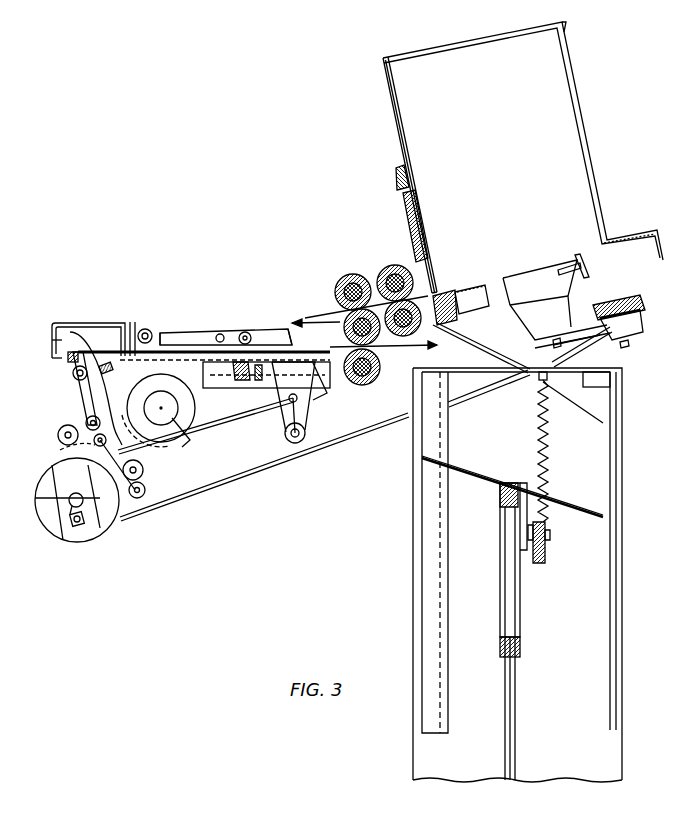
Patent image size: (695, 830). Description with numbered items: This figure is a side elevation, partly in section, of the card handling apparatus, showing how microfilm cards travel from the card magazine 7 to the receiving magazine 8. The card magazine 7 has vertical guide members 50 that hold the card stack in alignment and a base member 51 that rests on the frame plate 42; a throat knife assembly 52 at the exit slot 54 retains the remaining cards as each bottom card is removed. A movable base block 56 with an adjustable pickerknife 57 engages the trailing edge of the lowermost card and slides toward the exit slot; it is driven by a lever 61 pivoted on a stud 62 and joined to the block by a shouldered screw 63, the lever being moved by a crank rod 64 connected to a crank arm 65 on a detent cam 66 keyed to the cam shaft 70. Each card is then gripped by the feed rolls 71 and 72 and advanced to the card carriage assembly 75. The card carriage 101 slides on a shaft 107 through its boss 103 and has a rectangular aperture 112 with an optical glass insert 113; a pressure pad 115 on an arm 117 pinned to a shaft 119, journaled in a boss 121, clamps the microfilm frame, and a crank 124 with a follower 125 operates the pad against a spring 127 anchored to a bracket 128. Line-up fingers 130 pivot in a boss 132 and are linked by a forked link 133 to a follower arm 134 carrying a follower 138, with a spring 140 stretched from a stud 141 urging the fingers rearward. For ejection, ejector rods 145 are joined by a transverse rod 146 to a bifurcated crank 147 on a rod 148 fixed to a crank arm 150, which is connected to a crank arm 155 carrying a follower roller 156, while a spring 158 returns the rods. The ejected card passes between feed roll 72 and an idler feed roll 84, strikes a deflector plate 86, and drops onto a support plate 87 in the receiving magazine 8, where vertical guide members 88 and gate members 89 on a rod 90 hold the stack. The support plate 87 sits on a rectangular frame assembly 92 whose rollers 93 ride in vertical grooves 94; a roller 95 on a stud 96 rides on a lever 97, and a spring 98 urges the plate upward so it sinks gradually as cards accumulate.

The card magazine 7 is at (586, 77).
The receiving magazine 8 is at (636, 595).
The frame plate 42 is at (640, 290).
The vertical guide members 50 is at (404, 108).
The base member 51 is at (468, 286).
The throat knife assembly 52 is at (405, 243).
The exit slot 54 is at (445, 292).
The movable base block 56 is at (563, 305).
The pickerknife 57 is at (583, 257).
The lever 61 is at (643, 328).
The stud 62 is at (641, 313).
The shouldered screw 63 is at (553, 346).
The crank rod 64 is at (240, 480).
The crank arm 65 is at (65, 535).
The detent cam 66 is at (40, 512).
The cam shaft 70 is at (68, 498).
The feed rolls 71 is at (385, 267).
The feed rolls 72 is at (345, 278).
The card carriage assembly 75 is at (78, 320).
The idler feed roll 84 is at (377, 380).
The deflector plate 86 is at (523, 382).
The support plate 87 is at (484, 467).
The vertical guide members 88 is at (413, 601).
The gate members 89 is at (618, 533).
The rod 90 is at (610, 381).
The rectangular frame assembly 92 is at (522, 642).
The rollers 93 is at (505, 535).
The vertical grooves 94 is at (516, 675).
The roller 95 is at (550, 536).
The stud 96 is at (545, 527).
The lever 97 is at (547, 559).
The spring 98 is at (549, 448).
The card carriage 101 is at (306, 351).
The boss 103 is at (178, 447).
The shaft 107 is at (191, 441).
The rectangular aperture 112 is at (236, 330).
The optical glass insert 113 is at (250, 330).
The pressure pad 115 is at (280, 330).
The arm 117 is at (204, 331).
The shaft 119 is at (170, 333).
The boss 121 is at (150, 329).
The crank 124 is at (132, 321).
The follower 125 is at (145, 470).
The spring 127 is at (60, 362).
The bracket 128 is at (95, 322).
The line-up fingers 130 is at (328, 394).
The boss 132 is at (286, 406).
The forked link 133 is at (226, 420).
The follower arm 134 is at (115, 365).
The follower 138 is at (165, 503).
The spring 140 is at (258, 380).
The stud 141 is at (238, 380).
The ejector rods 145 is at (97, 386).
The transverse rod 146 is at (62, 322).
The bifurcated crank 147 is at (52, 342).
The rod 148 is at (75, 383).
The crank arm 150 is at (82, 403).
The crank arm 155 is at (85, 420).
The follower roller 156 is at (58, 435).
The spring 158 is at (60, 450).